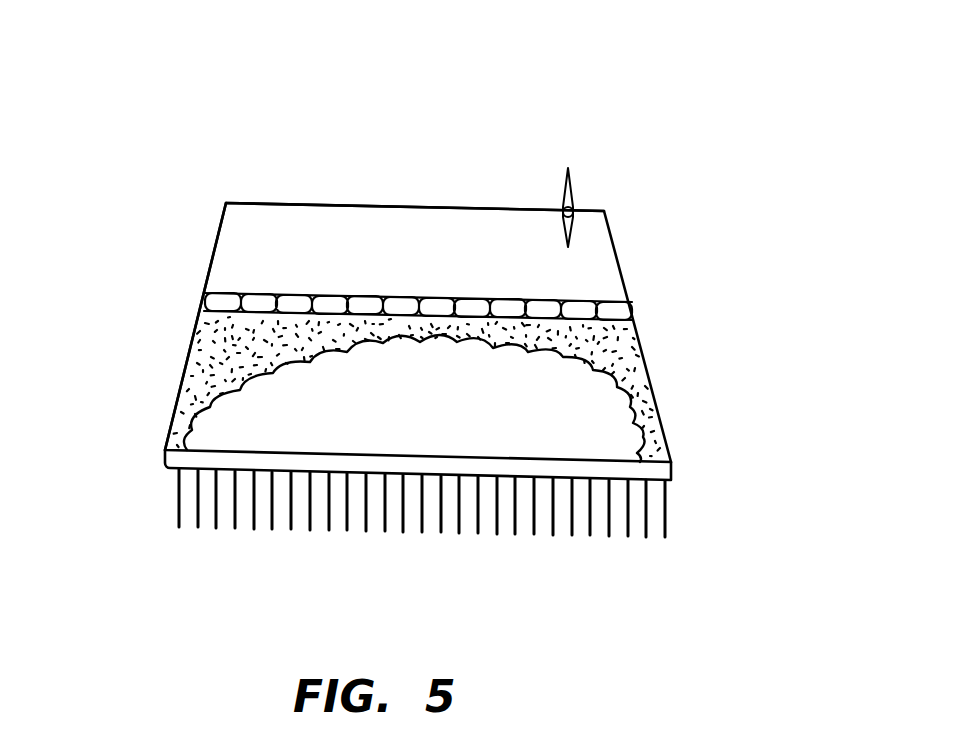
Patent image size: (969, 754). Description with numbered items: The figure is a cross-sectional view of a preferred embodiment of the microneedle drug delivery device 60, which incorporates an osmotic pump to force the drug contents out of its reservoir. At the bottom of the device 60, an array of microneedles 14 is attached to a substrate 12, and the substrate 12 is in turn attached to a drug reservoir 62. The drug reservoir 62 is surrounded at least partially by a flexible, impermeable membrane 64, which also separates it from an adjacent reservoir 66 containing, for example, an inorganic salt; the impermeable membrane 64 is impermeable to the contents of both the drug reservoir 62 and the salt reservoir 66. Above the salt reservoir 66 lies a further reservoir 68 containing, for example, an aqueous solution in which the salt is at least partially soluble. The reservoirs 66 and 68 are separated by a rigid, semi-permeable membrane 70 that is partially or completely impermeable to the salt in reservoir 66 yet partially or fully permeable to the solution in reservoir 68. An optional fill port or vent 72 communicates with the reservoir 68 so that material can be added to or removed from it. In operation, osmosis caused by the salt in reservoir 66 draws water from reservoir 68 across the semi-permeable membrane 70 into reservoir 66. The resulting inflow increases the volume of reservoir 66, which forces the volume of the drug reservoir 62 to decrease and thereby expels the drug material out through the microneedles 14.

The device 60 is at (412, 110).
The reservoir 68 is at (288, 237).
The fill port or vent 72 is at (575, 197).
The semi-permeable membrane 70 is at (632, 312).
The reservoir 66 is at (217, 348).
The impermeable membrane 64 is at (193, 422).
The substrate 12 is at (180, 460).
The drug reservoir 62 is at (577, 423).
The microneedles 14 is at (672, 510).